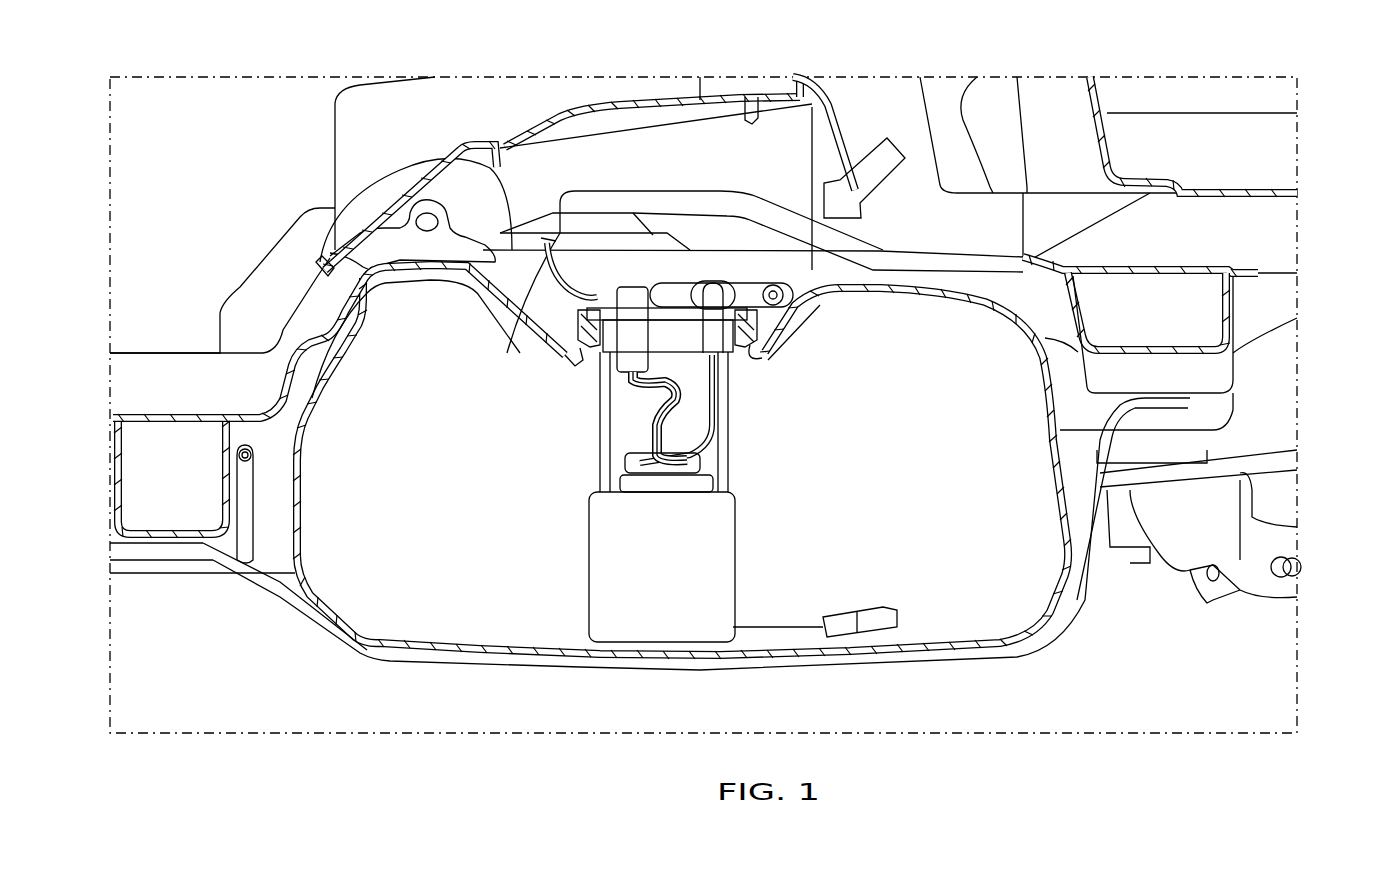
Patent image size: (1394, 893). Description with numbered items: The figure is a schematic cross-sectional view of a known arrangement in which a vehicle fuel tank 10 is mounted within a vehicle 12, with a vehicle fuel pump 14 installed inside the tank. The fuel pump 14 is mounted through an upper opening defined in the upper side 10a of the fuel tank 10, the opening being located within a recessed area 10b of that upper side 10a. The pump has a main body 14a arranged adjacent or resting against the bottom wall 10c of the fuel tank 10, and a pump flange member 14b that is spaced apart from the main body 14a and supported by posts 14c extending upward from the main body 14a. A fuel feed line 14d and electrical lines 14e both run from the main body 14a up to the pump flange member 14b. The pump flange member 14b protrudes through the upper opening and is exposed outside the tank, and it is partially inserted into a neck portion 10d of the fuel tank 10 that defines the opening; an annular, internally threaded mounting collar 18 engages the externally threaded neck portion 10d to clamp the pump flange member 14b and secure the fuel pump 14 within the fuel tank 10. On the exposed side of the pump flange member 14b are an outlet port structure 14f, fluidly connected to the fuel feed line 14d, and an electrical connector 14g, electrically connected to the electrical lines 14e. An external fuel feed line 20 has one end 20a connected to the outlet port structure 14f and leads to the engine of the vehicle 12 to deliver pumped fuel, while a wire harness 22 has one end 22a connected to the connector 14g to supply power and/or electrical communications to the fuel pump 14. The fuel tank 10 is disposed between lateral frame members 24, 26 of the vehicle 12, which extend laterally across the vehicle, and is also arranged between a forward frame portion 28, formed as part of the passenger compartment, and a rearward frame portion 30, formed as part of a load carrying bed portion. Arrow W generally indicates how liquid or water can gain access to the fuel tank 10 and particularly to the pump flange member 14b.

The vehicle fuel tank 10 is at (290, 577).
The upper side 10a is at (462, 284).
The recessed area 10b is at (577, 362).
The bottom wall 10c is at (840, 660).
The neck portion 10d is at (460, 157).
The vehicle 12 is at (937, 50).
The vehicle fuel pump 14 is at (698, 390).
The main body 14a is at (613, 572).
The pump flange member 14b is at (666, 333).
The posts 14c is at (605, 448).
The fuel feed line 14d is at (720, 416).
The electrical lines 14e is at (650, 437).
The outlet port structure 14f is at (713, 290).
The electrical connector 14g is at (630, 293).
The mounting collar 18 is at (743, 340).
The fuel feed line 20 is at (746, 287).
The end of fuel feed line 20a is at (685, 297).
The wire harness 22 is at (514, 326).
The end of wire harness 22a is at (580, 207).
The lateral frame member 24 is at (133, 537).
The lateral frame member 26 is at (1240, 320).
The forward frame portion 28 is at (243, 188).
The rearward frame portion 30 is at (1059, 140).
The arrow indicating water access W is at (880, 195).